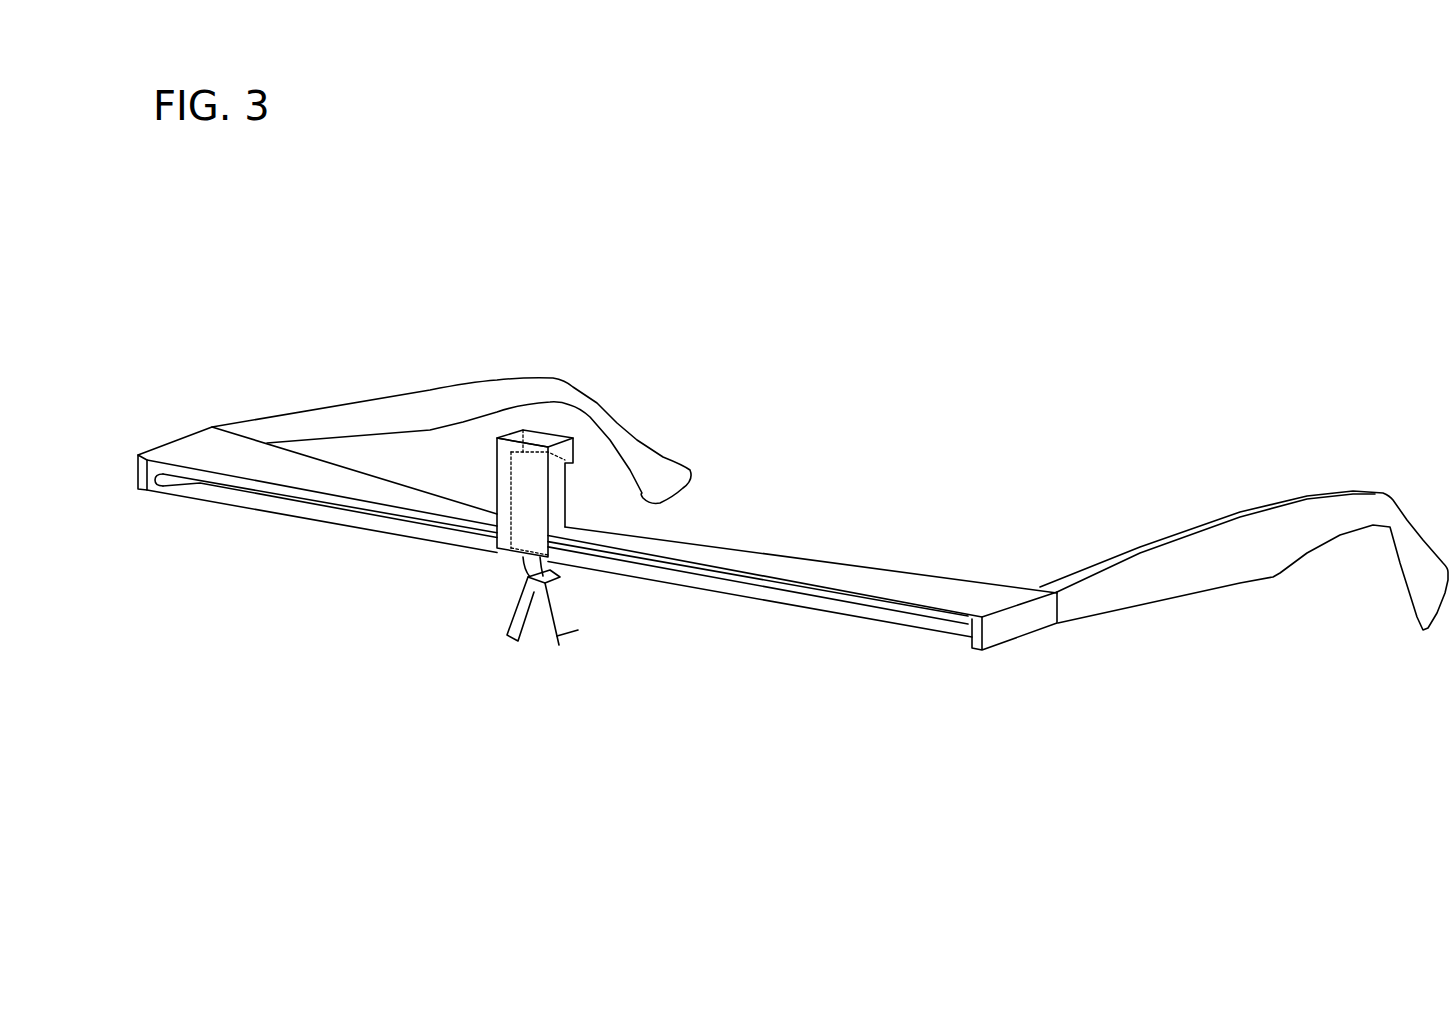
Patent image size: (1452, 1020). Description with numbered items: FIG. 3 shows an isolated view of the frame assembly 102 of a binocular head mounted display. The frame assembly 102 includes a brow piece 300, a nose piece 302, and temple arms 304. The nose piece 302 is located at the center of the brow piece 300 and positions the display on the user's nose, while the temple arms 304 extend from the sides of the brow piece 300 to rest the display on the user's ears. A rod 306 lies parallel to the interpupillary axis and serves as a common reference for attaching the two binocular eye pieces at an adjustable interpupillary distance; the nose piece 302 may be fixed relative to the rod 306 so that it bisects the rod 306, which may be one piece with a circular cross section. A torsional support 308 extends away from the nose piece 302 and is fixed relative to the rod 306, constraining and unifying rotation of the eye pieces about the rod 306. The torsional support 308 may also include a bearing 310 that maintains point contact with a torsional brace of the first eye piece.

The frame assembly 102 is at (496, 286).
The brow piece 300 is at (903, 582).
The nose piece 302 is at (565, 612).
The temple arms 304 is at (637, 462).
The rod 306 is at (405, 517).
The torsional support 308 is at (530, 516).
The bearing 310 is at (545, 443).